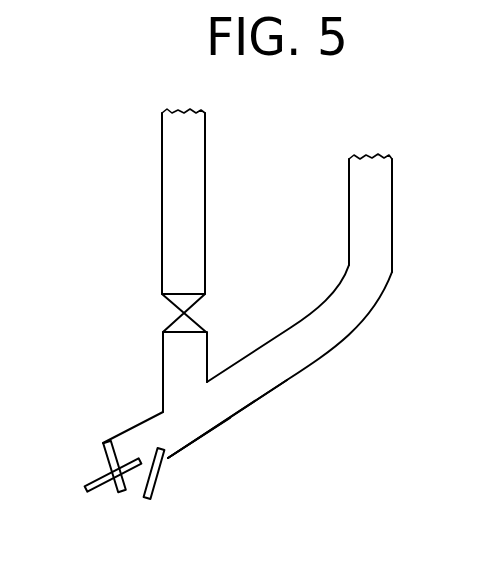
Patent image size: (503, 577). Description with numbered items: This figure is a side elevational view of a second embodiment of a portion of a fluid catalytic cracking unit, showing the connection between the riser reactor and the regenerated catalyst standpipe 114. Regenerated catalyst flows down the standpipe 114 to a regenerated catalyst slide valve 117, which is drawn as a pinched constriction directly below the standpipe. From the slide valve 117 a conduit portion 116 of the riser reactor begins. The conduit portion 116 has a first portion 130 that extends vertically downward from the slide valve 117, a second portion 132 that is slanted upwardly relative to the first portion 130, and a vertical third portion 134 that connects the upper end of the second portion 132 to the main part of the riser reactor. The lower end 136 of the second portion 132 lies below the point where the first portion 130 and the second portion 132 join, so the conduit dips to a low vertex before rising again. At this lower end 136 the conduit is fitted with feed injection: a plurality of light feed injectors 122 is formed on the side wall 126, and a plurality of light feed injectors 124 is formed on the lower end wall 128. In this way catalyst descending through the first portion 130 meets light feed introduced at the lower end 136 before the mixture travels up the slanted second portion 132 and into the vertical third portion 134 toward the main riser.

The regenerated catalyst standpipe 114 is at (162, 202).
The regenerated catalyst slide valve 117 is at (176, 314).
The first portion 130 is at (173, 360).
The second portion 132 is at (280, 351).
The conduit portion 116 is at (280, 387).
The third portion 134 is at (380, 190).
The side wall 126 is at (190, 444).
The lower end 136 is at (134, 441).
The lower end wall 128 is at (101, 457).
The light feed injectors 124 is at (97, 469).
The light feed injectors 122 is at (154, 487).